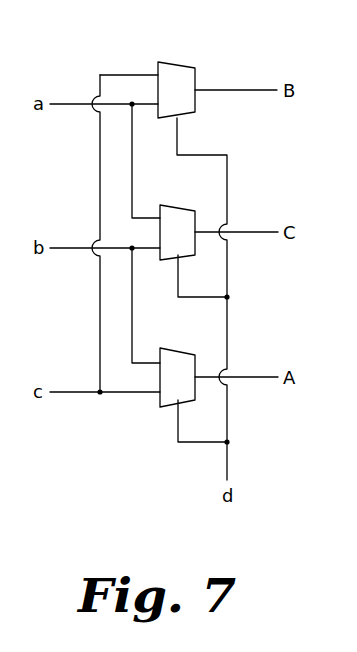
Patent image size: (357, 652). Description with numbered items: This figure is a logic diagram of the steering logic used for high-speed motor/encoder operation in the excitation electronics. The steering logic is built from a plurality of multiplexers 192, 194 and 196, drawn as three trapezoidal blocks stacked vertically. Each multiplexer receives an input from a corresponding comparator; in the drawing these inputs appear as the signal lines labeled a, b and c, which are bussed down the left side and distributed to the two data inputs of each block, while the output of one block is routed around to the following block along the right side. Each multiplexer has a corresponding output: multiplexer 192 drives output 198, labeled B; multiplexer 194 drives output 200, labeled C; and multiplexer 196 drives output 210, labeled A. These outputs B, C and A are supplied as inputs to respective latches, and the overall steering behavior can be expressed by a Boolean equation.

The multiplexer 192 is at (182, 63).
The multiplexer 194 is at (192, 210).
The multiplexer 196 is at (192, 352).
The output (B) 198 is at (257, 83).
The output (C) 200 is at (253, 227).
The output (A) 210 is at (257, 372).